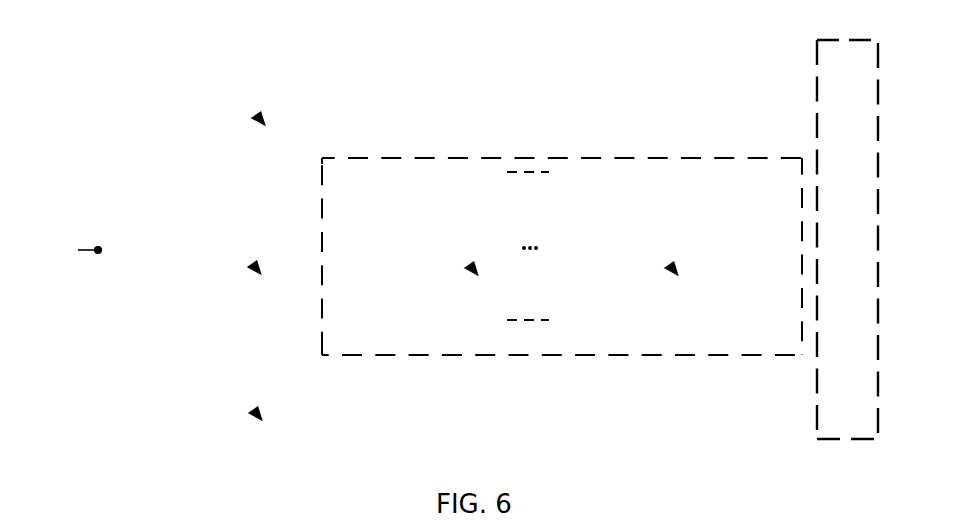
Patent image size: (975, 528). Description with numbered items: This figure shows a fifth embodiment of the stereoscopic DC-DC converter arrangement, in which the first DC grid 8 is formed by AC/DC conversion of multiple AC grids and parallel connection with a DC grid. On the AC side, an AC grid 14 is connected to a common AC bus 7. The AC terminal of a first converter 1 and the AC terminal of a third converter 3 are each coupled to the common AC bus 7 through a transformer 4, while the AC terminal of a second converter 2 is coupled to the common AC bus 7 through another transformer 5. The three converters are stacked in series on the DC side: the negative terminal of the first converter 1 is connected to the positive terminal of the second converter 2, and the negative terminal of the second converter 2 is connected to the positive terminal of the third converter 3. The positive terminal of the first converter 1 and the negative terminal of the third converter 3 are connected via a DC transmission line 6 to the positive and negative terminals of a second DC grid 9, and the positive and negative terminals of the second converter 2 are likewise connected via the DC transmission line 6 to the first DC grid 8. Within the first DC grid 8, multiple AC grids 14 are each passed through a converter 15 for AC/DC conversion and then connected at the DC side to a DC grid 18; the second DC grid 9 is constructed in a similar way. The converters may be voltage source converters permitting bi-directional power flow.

The first converter 1 is at (289, 70).
The second converter 2 is at (291, 222).
The third converter 3 is at (292, 378).
The transformer 4 is at (158, 74).
The transformer 5 is at (155, 224).
The DC transmission line 6 is at (517, 17).
The common AC bus 7 is at (98, 80).
The first DC grid 8 is at (540, 360).
The second DC grid 9 is at (880, 240).
The AC grid 14 is at (52, 222).
The converter 15 is at (520, 182).
The DC grid 18 is at (762, 183).